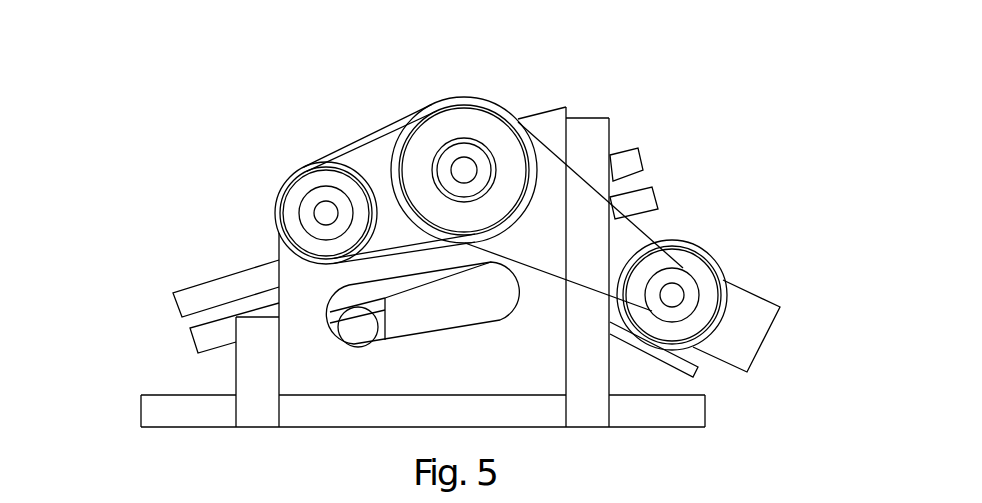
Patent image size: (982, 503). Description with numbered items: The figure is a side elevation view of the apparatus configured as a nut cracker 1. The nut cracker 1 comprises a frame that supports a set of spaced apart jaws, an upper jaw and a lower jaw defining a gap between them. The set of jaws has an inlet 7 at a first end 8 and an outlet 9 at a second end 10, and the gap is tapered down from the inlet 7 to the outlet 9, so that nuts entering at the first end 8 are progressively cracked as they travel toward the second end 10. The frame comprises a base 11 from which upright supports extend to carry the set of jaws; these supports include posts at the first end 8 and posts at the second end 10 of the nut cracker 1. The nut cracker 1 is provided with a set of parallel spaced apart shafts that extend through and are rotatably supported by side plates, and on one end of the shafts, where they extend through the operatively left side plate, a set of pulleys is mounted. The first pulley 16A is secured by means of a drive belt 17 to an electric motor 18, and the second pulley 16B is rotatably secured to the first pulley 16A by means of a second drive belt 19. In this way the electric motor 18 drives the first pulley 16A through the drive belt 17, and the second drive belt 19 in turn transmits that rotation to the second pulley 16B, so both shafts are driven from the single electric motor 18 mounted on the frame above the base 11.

The nut cracker 1 is at (169, 85).
The inlet 7 is at (656, 164).
The first end 8 is at (806, 352).
The outlet 9 is at (151, 309).
The second end 10 is at (147, 337).
The base 11 is at (693, 408).
The first pulley 16A is at (467, 128).
The second pulley 16B is at (273, 211).
The drive belt 17 is at (642, 232).
The electric motor 18 is at (700, 267).
The second drive belt 19 is at (353, 143).